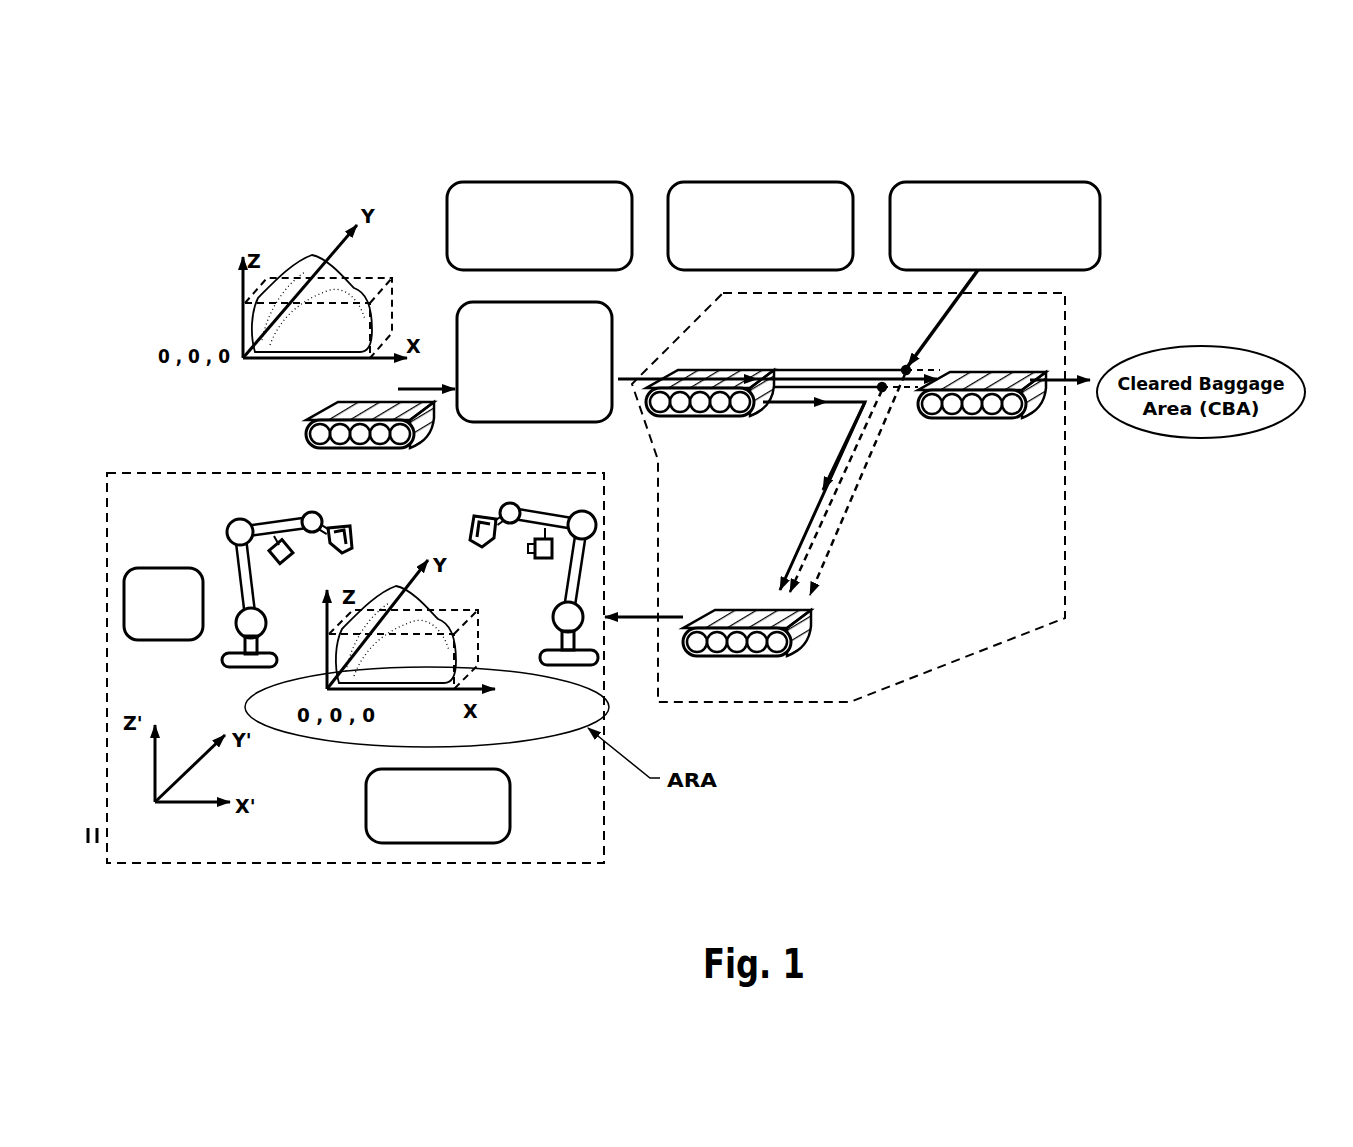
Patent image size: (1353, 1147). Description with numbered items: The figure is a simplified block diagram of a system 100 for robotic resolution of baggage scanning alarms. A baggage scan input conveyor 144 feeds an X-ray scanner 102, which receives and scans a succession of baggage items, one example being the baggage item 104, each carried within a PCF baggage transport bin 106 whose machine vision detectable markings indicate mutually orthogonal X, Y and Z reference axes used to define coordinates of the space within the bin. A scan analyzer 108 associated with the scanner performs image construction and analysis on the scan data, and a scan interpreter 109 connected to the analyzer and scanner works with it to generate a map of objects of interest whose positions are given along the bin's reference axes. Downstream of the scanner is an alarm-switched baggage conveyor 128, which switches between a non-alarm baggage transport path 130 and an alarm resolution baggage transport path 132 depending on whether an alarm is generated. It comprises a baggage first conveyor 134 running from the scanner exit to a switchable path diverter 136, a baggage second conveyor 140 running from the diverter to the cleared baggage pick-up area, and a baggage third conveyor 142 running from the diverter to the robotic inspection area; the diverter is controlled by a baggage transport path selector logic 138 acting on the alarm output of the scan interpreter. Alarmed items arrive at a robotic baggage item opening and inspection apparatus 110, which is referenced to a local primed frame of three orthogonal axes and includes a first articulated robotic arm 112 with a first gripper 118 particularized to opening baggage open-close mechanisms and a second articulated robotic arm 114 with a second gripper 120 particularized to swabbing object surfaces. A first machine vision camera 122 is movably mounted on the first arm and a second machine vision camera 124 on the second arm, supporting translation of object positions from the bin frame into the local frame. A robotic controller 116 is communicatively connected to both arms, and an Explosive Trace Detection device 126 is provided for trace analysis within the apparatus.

The system for robotic resolution of scan alarms 100 is at (1222, 108).
The X-ray scanner 102 is at (612, 323).
The baggage item 104 is at (366, 287).
The PCF baggage transport bin 106 is at (277, 280).
The scan analyzer 108 is at (590, 182).
The scan interpreter 109 is at (826, 182).
The robotic baggage item opening and inspection apparatus 110 is at (538, 473).
The first articulated robotic arm 112 is at (538, 578).
The second articulated robotic arm 114 is at (253, 574).
The robotic controller 116 is at (510, 785).
The first gripper 118 is at (467, 520).
The second gripper 120 is at (337, 517).
The first machine vision camera 122 is at (545, 554).
The second machine vision camera 124 is at (269, 565).
The Explosive Trace Detection (ETD) device 126 is at (150, 568).
The alarm-switched baggage conveyor 128 is at (1067, 316).
The non-alarm baggage transport path 130 is at (870, 370).
The alarm resolution baggage transport path 132 is at (805, 527).
The baggage first conveyor 134 is at (720, 358).
The switchable path diverter 136 is at (920, 363).
The baggage transport path selector logic 138 is at (1084, 182).
The baggage second conveyor 140 is at (993, 427).
The baggage third conveyor 142 is at (737, 665).
The baggage scan input conveyor 144 is at (310, 418).